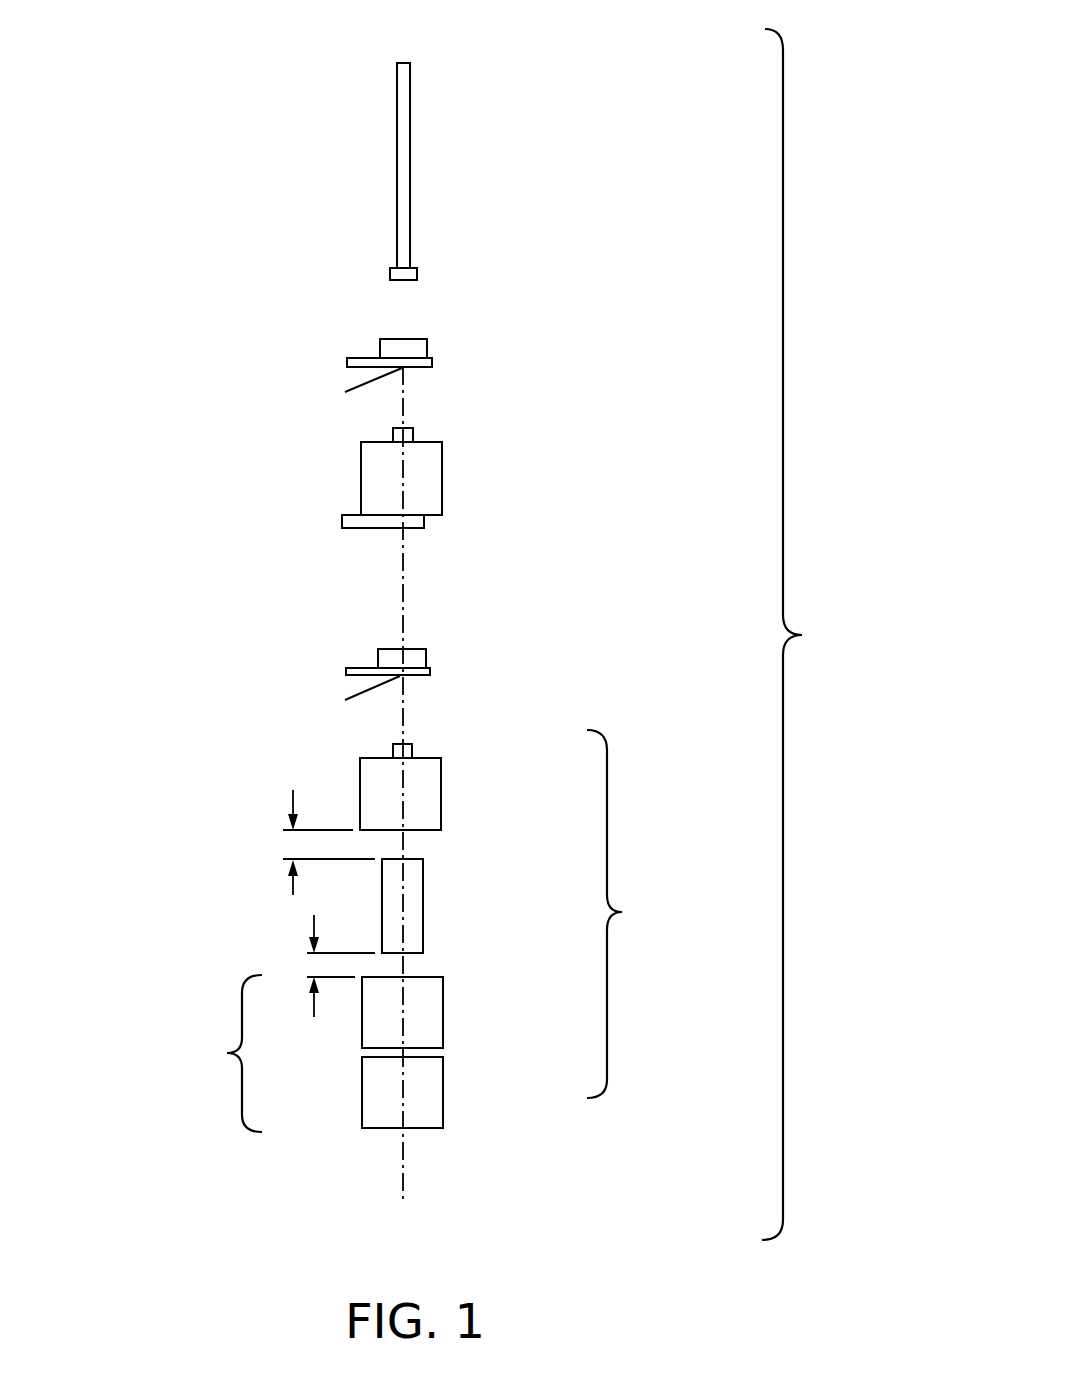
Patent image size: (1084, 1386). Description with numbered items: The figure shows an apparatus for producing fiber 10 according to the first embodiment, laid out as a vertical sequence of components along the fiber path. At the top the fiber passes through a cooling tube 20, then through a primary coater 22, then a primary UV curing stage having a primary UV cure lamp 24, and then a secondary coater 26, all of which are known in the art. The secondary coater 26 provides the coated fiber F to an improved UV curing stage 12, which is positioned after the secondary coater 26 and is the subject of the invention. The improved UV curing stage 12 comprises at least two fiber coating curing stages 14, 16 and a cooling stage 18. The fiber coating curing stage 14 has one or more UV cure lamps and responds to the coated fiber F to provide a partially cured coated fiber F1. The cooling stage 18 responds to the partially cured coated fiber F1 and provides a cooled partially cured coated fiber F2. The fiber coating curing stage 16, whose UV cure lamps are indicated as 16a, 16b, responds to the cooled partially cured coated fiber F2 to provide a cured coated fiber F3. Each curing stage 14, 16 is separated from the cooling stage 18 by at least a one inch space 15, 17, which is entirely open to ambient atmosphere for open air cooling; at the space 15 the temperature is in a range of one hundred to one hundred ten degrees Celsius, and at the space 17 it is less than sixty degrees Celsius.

The fiber producing apparatus 10 is at (658, 88).
The improved UV curing stage 12 is at (624, 914).
The fiber coating curing stage 14 is at (441, 792).
The one inch space 15 is at (292, 800).
The fiber coating curing stage 16 is at (228, 1053).
The secondary UV cure lamp 16a is at (443, 1015).
The secondary UV cure lamp 16b is at (443, 1088).
The one inch space 17 is at (313, 935).
The cooling stage 18 is at (423, 893).
The cooling tube 20 is at (412, 190).
The primary coater 22 is at (427, 345).
The primary UV cure lamp 24 is at (442, 472).
The secondary coater 26 is at (426, 658).
The coated fiber F is at (403, 702).
The partially cured coated fiber F1 is at (403, 840).
The cooled partially cured coated fiber F2 is at (403, 966).
The cured coated fiber F3 is at (403, 1152).